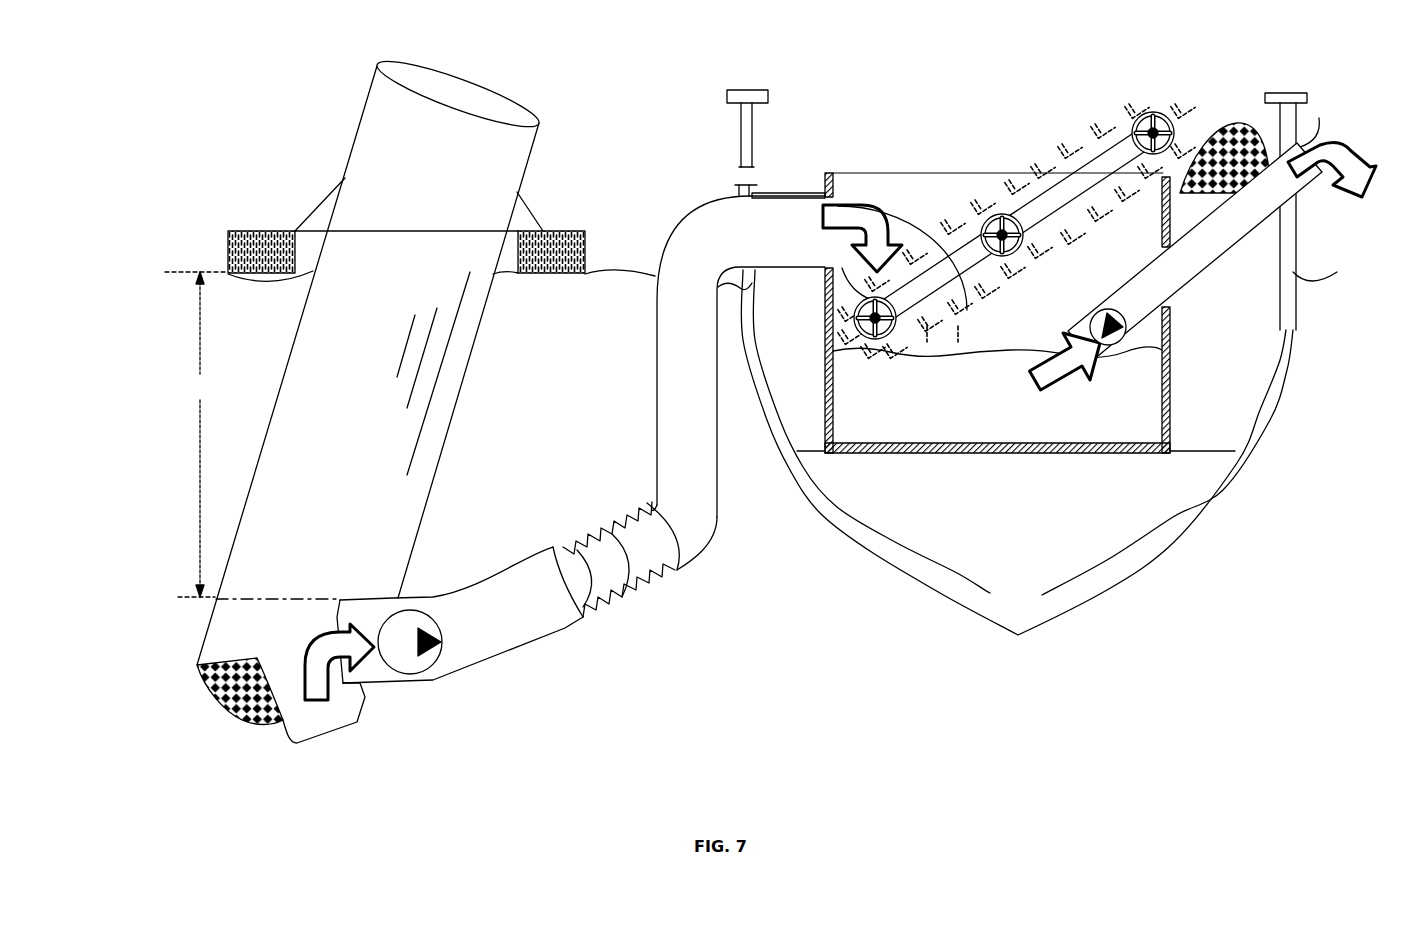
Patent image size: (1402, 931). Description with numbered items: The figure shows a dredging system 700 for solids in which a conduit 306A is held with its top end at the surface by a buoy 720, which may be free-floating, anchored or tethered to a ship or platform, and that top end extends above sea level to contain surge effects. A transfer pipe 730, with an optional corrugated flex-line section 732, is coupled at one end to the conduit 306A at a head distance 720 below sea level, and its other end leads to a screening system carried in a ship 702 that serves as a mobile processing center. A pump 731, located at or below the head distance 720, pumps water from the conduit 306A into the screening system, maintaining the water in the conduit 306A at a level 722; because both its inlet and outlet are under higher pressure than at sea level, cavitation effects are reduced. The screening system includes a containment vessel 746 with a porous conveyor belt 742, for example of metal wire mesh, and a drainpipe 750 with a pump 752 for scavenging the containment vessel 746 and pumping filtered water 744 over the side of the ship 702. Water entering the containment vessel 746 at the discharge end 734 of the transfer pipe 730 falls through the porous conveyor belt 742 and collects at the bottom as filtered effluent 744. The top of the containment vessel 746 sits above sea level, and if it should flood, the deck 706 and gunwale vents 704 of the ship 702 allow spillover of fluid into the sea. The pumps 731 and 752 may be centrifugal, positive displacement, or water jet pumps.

The dredging system 700 is at (1177, 53).
The ship 702 is at (1024, 603).
The gunwale vents 704 is at (732, 167).
The deck 706 is at (797, 193).
The conduit 306A is at (373, 147).
The buoy / head distance 720 is at (410, 387).
The water level 722 is at (289, 593).
The transfer pipe 730 is at (495, 624).
The pump 731 is at (410, 642).
The corrugated flex-line section 732 is at (641, 565).
The discharge end 734 is at (811, 237).
The porous conveyor belt 742 is at (1084, 197).
The filtered water / filtered effluent 744 is at (1007, 418).
The containment vessel 746 is at (827, 347).
The drainpipe 750 is at (1200, 268).
The pump 752 is at (1097, 323).